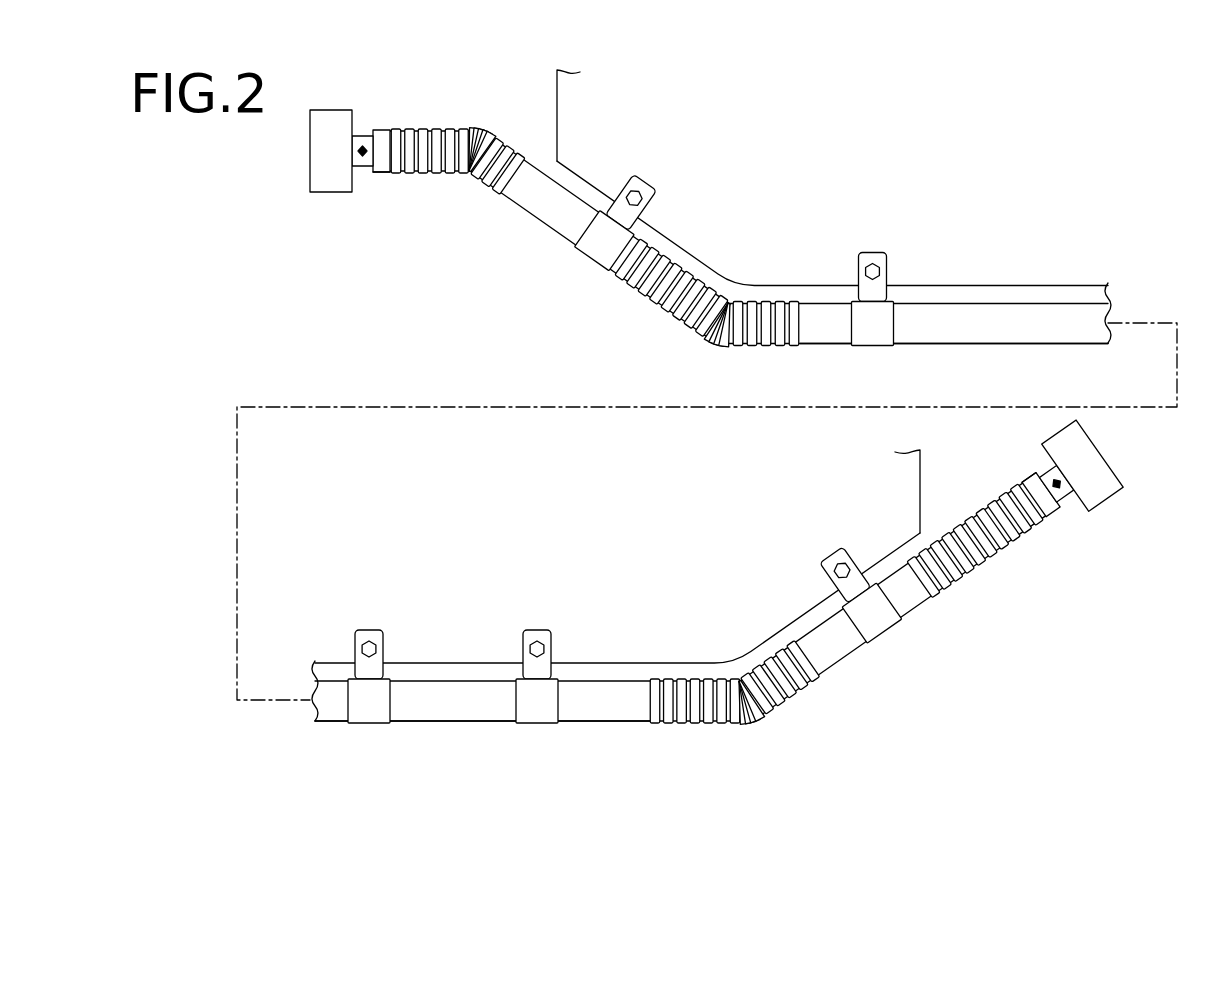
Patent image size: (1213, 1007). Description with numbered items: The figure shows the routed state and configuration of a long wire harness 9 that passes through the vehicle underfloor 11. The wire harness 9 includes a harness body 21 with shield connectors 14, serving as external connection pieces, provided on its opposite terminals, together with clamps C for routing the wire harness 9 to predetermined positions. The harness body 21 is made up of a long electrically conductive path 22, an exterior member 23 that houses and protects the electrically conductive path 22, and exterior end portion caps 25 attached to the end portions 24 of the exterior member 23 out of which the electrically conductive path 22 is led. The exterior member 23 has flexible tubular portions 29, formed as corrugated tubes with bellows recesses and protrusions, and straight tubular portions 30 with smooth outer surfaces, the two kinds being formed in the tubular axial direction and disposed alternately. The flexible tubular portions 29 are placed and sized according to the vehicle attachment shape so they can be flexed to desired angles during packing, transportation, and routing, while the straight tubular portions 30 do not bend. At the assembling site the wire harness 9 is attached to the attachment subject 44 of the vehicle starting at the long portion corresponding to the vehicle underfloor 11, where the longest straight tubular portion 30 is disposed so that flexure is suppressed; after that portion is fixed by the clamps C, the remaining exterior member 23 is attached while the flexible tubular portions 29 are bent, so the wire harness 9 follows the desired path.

The wire harness 9 is at (522, 289).
The vehicle underfloor 11 is at (1050, 283).
The shield connector 14 is at (333, 193).
The harness body 21 is at (965, 350).
The electrically conductive path 22 is at (363, 135).
The exterior member 23 is at (1083, 312).
The end portion of the exterior member 24 is at (388, 130).
The exterior end portion cap 25 is at (383, 173).
The flexible tubular portion 29 is at (455, 130).
The straight tubular portion 30 is at (633, 252).
The attachment subject 44 is at (557, 125).
The clamp C is at (600, 257).